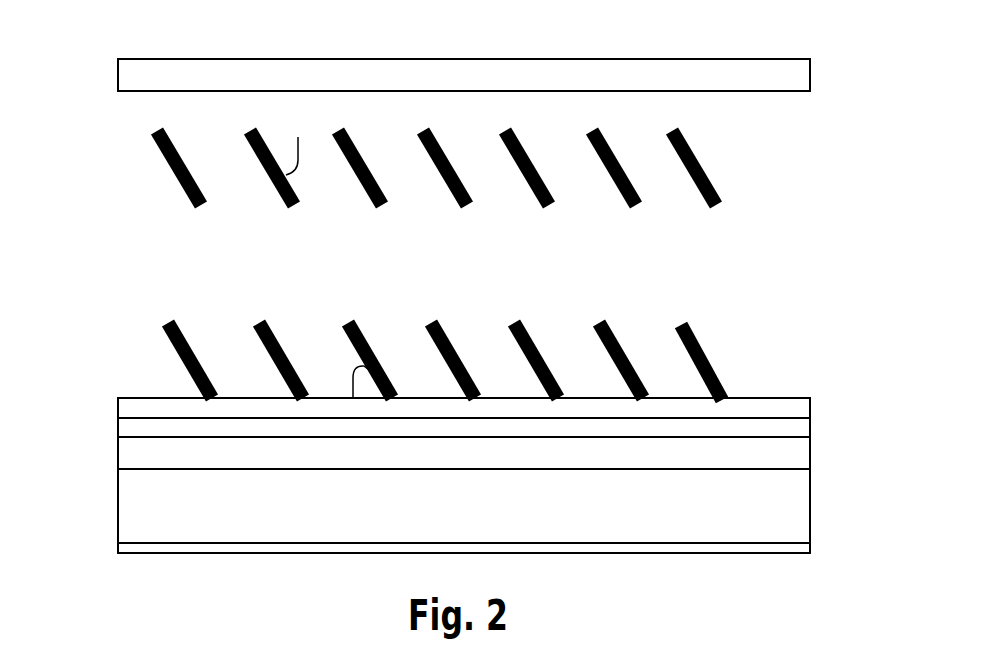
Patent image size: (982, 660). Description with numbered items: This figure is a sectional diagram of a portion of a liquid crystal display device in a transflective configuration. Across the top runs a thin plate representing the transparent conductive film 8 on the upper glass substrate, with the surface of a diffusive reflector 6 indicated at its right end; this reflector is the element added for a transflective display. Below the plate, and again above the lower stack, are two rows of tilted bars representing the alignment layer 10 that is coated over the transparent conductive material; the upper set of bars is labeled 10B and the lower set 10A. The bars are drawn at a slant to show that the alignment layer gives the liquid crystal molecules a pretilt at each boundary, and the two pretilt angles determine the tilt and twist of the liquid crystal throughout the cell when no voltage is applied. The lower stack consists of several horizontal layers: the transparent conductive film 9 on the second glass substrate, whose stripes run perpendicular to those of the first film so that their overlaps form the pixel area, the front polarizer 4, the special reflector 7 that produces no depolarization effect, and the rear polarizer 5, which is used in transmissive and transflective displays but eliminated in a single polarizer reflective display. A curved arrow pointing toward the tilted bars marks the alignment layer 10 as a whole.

The diffusive reflector 6 is at (810, 78).
The transparent conductive film 8 is at (102, 93).
The alignment layer 10 is at (718, 258).
The lower alignment bars 10A is at (715, 348).
The upper alignment bars 10B is at (178, 187).
The transparent conductive film 9 is at (810, 423).
The front polarizer 4 is at (812, 437).
The special reflector 7 is at (120, 455).
The rear polarizer 5 is at (120, 532).